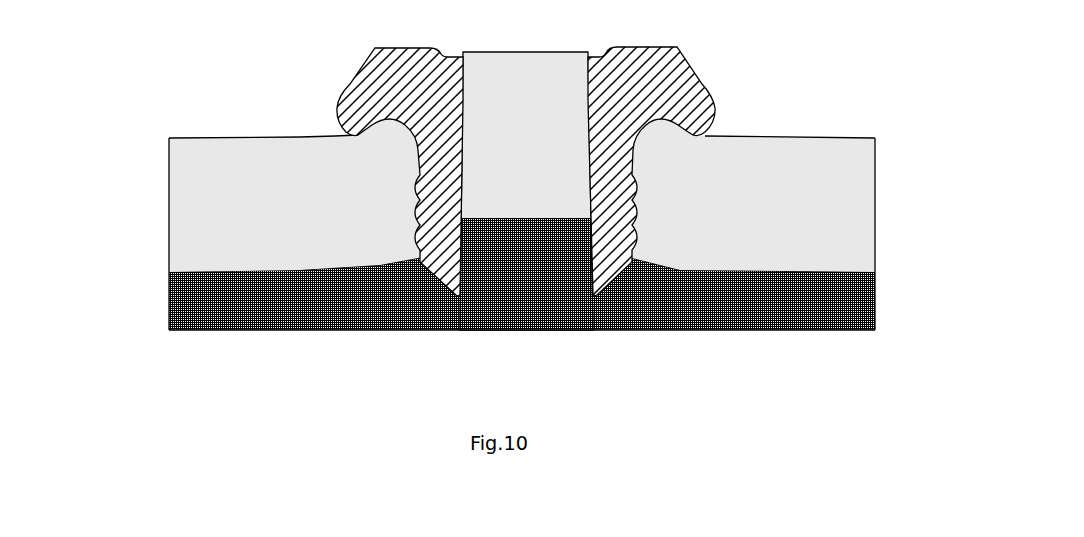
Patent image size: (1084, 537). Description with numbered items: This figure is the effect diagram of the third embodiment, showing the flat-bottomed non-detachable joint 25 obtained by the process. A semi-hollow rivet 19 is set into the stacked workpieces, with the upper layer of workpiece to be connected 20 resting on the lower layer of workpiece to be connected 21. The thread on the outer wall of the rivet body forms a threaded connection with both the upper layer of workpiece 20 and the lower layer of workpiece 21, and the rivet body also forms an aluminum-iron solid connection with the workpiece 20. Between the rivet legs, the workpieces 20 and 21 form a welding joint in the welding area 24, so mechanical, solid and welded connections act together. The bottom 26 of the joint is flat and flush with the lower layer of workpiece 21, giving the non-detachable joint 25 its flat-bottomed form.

The semi-hollow rivet 19 is at (663, 92).
The upper layer of workpiece to be connected 20 is at (196, 223).
The lower layer of workpiece to be connected 21 is at (211, 304).
The welding area 24 is at (551, 230).
The non detachable joint 25 is at (548, 184).
The bottom of the joint 26 is at (339, 341).